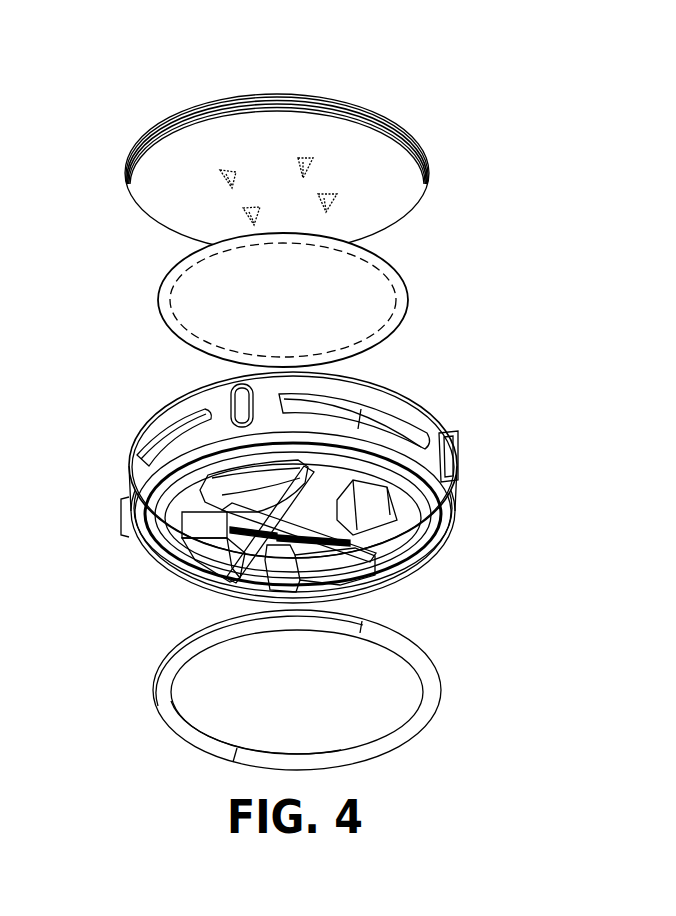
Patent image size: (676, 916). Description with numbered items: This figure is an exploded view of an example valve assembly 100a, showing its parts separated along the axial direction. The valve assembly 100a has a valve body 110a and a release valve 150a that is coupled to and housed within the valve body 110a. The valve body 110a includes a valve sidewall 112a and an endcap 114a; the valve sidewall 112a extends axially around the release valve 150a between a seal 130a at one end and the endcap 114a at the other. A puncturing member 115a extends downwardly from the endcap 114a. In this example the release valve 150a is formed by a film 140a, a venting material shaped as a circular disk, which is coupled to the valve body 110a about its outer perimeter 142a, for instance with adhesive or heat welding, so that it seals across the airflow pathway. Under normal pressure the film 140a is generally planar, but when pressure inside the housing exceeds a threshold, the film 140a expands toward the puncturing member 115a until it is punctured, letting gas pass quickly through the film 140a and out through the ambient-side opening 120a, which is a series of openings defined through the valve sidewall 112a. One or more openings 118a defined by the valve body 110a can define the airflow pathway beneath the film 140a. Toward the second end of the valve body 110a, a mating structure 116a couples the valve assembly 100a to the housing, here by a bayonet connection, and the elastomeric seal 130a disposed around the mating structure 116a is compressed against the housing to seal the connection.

The valve assembly 100a is at (357, 73).
The valve body 110a is at (143, 221).
The valve sidewall 112a is at (410, 413).
The endcap 114a is at (398, 178).
The puncturing member 115a is at (298, 172).
The mating structure 116a is at (404, 523).
The openings 118a is at (327, 505).
The ambient-side opening 120a is at (190, 432).
The seal 130a is at (430, 686).
The film 140a is at (390, 316).
The outer perimeter 142a is at (400, 275).
The release valve 150a is at (98, 190).